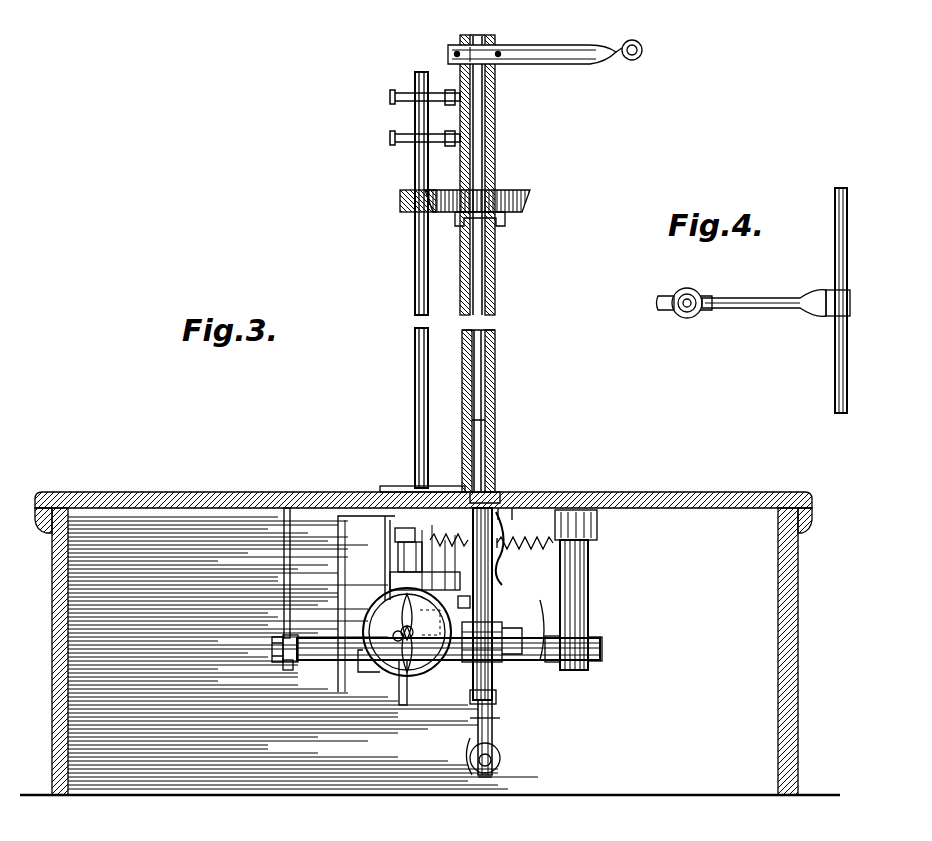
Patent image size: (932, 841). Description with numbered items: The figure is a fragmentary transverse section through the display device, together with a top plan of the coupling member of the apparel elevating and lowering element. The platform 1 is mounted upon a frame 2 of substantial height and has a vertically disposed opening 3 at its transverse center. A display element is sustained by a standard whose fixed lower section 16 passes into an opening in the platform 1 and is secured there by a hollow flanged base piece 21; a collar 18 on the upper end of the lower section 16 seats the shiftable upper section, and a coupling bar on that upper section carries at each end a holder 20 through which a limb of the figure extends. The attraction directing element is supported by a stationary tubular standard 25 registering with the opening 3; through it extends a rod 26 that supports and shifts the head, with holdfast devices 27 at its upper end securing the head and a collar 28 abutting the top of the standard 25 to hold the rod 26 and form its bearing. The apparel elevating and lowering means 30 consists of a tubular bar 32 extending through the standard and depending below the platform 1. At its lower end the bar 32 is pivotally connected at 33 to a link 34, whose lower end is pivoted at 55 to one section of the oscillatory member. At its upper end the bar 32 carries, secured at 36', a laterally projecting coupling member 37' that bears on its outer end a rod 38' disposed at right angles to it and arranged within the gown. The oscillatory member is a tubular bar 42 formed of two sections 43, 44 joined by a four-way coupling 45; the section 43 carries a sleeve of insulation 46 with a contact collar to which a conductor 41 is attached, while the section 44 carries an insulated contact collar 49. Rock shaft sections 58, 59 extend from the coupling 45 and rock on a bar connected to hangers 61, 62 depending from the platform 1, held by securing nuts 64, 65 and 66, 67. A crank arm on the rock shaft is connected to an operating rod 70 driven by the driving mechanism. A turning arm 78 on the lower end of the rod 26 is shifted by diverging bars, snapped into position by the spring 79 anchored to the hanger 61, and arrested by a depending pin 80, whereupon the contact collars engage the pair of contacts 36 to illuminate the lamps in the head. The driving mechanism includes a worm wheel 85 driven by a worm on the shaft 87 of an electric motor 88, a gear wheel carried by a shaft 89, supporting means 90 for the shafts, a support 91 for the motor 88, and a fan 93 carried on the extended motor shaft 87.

In FIG. 3, the platform 1 is at (692, 492).
In FIG. 3, the frame 2 is at (798, 592).
In FIG. 3, the vertically disposed opening 3 is at (392, 486).
In FIG. 3, the fixed lower section 16 is at (496, 308).
In FIG. 3, the collar 18 is at (500, 220).
In FIG. 3, the holder 20 is at (522, 192).
In FIG. 3, the hollow flanged base piece 21 is at (515, 505).
In FIG. 3, the tubular standard 25 is at (413, 377).
In FIG. 3, the rod 26 is at (420, 167).
In FIG. 3, the holdfast devices 27 is at (390, 138).
In FIG. 3, the collar 28 is at (400, 206).
In FIG. 3, the apparel elevating and lowering means 30 is at (472, 687).
In FIG. 3, the tubular bar 32 is at (494, 403).
In FIG. 3, the pivotal connection 33 is at (496, 702).
In FIG. 3, the link 34 is at (493, 728).
In FIG. 3, the pair of contacts 36 is at (519, 548).
In FIG. 3, the coupling member 37' is at (532, 60).
In FIG. 4, the coupling member 37' is at (776, 315).
In FIG. 3, the rod 38' is at (624, 58).
In FIG. 4, the rod 38' is at (861, 300).
In FIG. 4, the securing connection 36' is at (685, 323).
In FIG. 3, the conductor 41 is at (470, 748).
In FIG. 3, the tubular bar 42 is at (493, 617).
In FIG. 3, the section 43 is at (476, 724).
In FIG. 3, the section 44 is at (470, 602).
In FIG. 3, the four-way coupling 45 is at (505, 634).
In FIG. 3, the sleeve of insulation 46 is at (470, 764).
In FIG. 3, the contact collar 49 is at (490, 492).
In FIG. 3, the pivotal connection 55 is at (500, 772).
In FIG. 3, the rock shaft section 58 is at (546, 624).
In FIG. 3, the rock shaft section 59 is at (310, 663).
In FIG. 3, the hanger 61 is at (580, 598).
In FIG. 3, the hanger 62 is at (283, 594).
In FIG. 3, the securing nut 64 is at (600, 643).
In FIG. 3, the securing nut 65 is at (554, 662).
In FIG. 3, the securing nut 66 is at (272, 648).
In FIG. 3, the securing nut 67 is at (292, 670).
In FIG. 3, the operating rod 70 is at (449, 531).
In FIG. 3, the turning arm 78 is at (400, 552).
In FIG. 3, the spring 79 is at (525, 534).
In FIG. 3, the depending pin 80 is at (395, 534).
In FIG. 3, the worm wheel 85 is at (392, 577).
In FIG. 3, the motor shaft 87 is at (395, 652).
In FIG. 3, the electric motor 88 is at (400, 660).
In FIG. 3, the shaft 89 is at (388, 598).
In FIG. 3, the supporting means 90 is at (387, 560).
In FIG. 3, the support 91 is at (338, 600).
In FIG. 3, the fan 93 is at (403, 705).